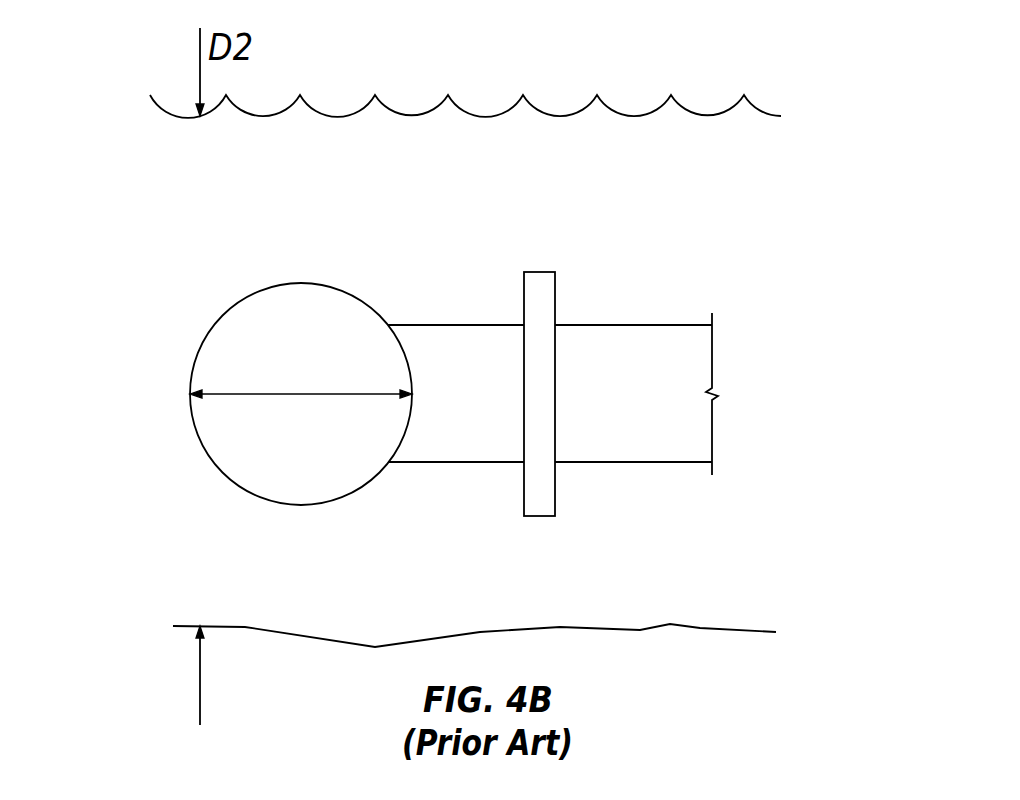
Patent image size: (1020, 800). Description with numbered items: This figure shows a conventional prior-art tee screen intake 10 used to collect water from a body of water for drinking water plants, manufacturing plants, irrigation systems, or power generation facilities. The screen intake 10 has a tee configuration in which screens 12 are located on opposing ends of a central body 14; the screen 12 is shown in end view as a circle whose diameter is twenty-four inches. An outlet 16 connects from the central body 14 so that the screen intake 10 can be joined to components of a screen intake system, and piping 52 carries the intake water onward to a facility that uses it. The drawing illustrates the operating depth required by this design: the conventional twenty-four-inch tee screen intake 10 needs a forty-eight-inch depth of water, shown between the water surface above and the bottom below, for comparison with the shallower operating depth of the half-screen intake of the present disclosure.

The screen intake 10 is at (74, 304).
The screen 12 is at (233, 302).
The central body 14 is at (301, 394).
The outlet 16 is at (420, 324).
The piping 52 is at (636, 324).